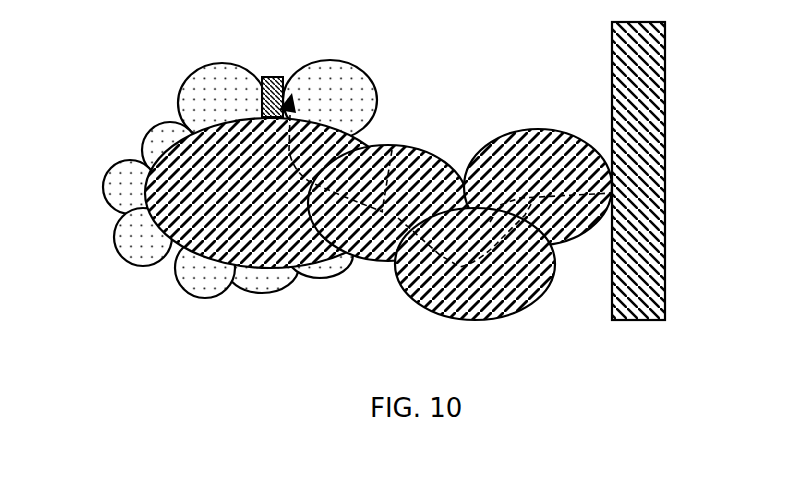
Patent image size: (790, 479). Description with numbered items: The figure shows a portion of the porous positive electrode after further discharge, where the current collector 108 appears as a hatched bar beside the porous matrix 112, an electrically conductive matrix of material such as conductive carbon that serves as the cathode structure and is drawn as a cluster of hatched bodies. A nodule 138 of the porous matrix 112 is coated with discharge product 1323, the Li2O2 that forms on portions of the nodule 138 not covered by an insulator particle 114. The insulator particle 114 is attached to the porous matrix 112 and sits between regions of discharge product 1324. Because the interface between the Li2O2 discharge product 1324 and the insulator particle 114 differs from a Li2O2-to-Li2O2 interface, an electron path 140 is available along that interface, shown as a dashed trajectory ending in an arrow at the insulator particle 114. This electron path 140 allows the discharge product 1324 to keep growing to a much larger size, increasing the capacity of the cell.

The current collector 108 is at (612, 32).
The porous matrix 112 is at (369, 332).
The insulator particle 114 is at (273, 76).
The discharge product 132₃ 1323 is at (250, 298).
The discharge product 132₄ 1324 is at (197, 96).
The nodule 138 is at (177, 278).
The electron path 140 is at (423, 147).